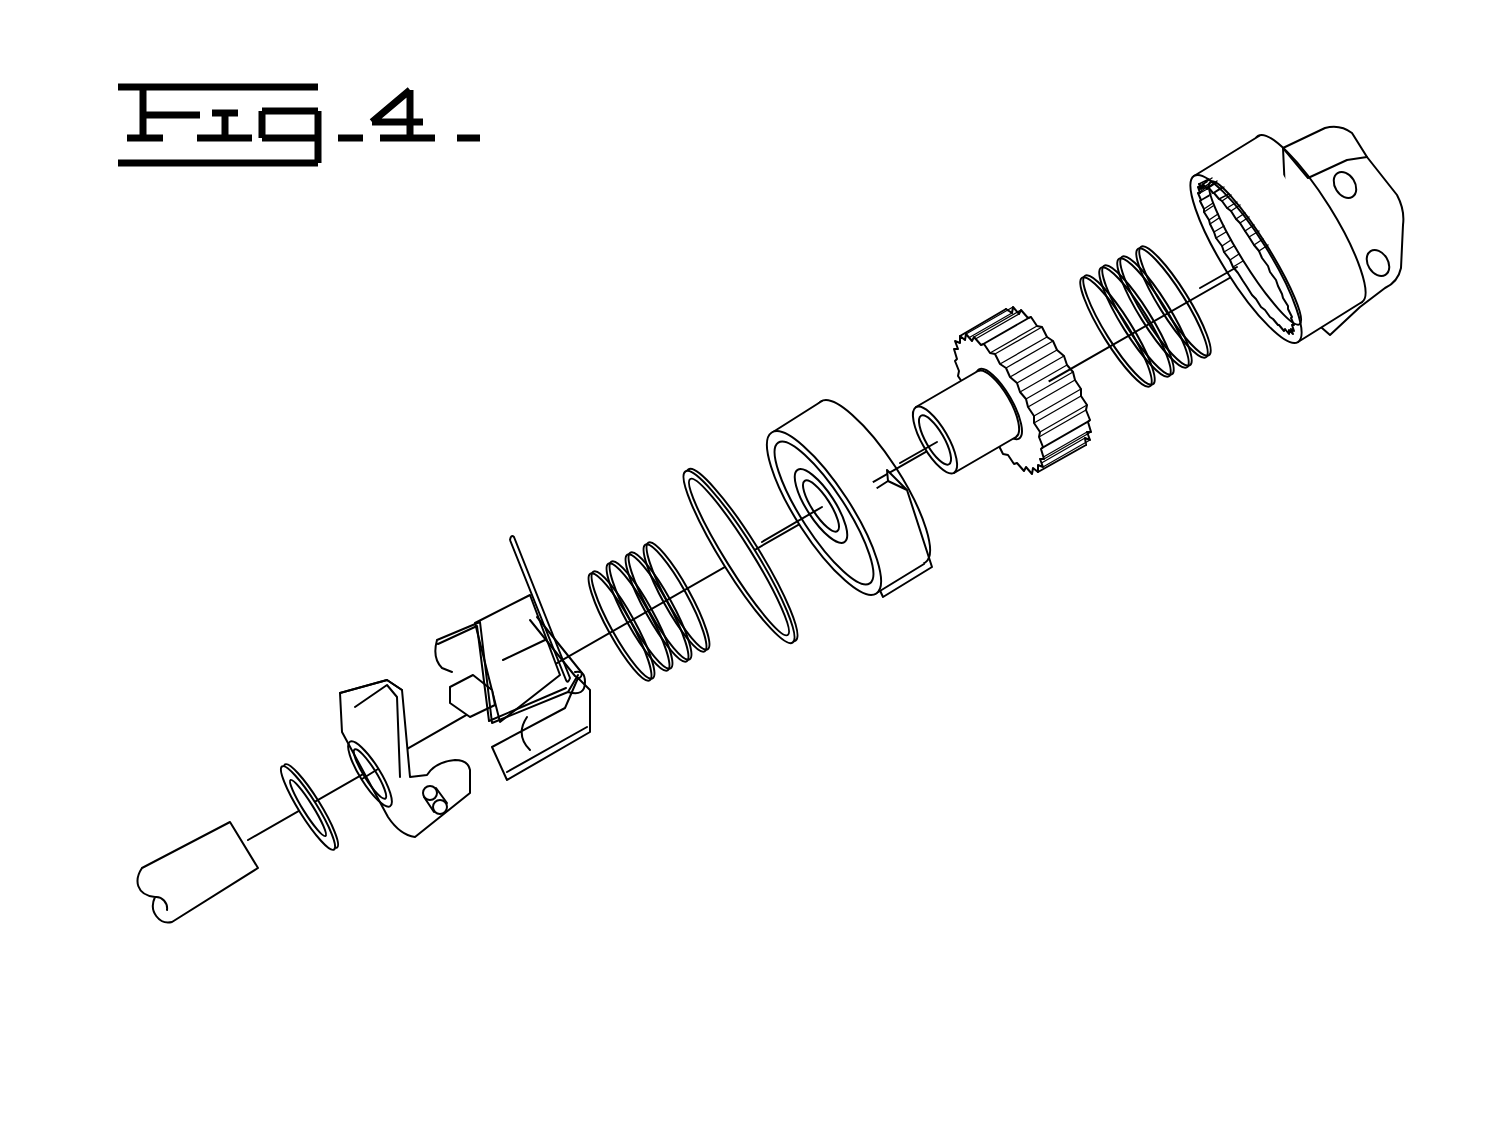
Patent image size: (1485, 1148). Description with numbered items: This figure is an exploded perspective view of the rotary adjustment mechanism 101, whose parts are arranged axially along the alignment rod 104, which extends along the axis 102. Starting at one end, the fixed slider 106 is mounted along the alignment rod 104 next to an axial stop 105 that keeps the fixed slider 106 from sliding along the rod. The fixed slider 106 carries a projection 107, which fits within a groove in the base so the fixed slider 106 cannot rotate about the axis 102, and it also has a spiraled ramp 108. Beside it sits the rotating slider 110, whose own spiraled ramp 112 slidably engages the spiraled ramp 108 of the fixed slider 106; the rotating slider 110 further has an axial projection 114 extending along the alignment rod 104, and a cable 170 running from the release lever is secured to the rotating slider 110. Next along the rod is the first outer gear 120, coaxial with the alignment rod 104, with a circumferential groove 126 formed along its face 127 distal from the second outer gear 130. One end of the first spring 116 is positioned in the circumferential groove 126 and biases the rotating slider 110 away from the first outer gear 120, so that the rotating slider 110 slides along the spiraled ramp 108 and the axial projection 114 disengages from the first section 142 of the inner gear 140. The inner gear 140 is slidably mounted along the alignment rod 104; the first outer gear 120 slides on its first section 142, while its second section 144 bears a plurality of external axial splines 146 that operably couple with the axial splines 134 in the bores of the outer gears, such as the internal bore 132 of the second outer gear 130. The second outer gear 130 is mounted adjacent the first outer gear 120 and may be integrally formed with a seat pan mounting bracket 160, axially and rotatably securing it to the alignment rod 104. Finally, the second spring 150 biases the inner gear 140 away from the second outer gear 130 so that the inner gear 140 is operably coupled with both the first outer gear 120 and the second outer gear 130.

The rotary adjustment mechanism 101 is at (648, 456).
The axis 102 is at (953, 475).
The alignment rod 104 is at (193, 842).
The axial stop 105 is at (330, 850).
The fixed slider 106 is at (365, 764).
The projection 107 is at (445, 812).
The spiraled ramp 108 is at (396, 687).
The rotating slider 110 is at (481, 661).
The spiraled ramp 112 is at (445, 648).
The axial projection 114 is at (560, 620).
The first spring 116 is at (687, 662).
The first outer gear 120 is at (912, 585).
The circumferential groove 126 is at (848, 578).
The face 127 is at (778, 432).
The second outer gear 130 is at (1268, 262).
The internal bore 132 is at (1296, 338).
The axial splines 134 is at (1210, 228).
The inner gear 140 is at (978, 389).
The first section 142 is at (935, 392).
The second section 144 is at (962, 325).
The external axial splines 146 is at (1004, 312).
The second spring 150 is at (1175, 380).
The seat pan mounting bracket 160 is at (1398, 192).
The cable 170 is at (510, 545).